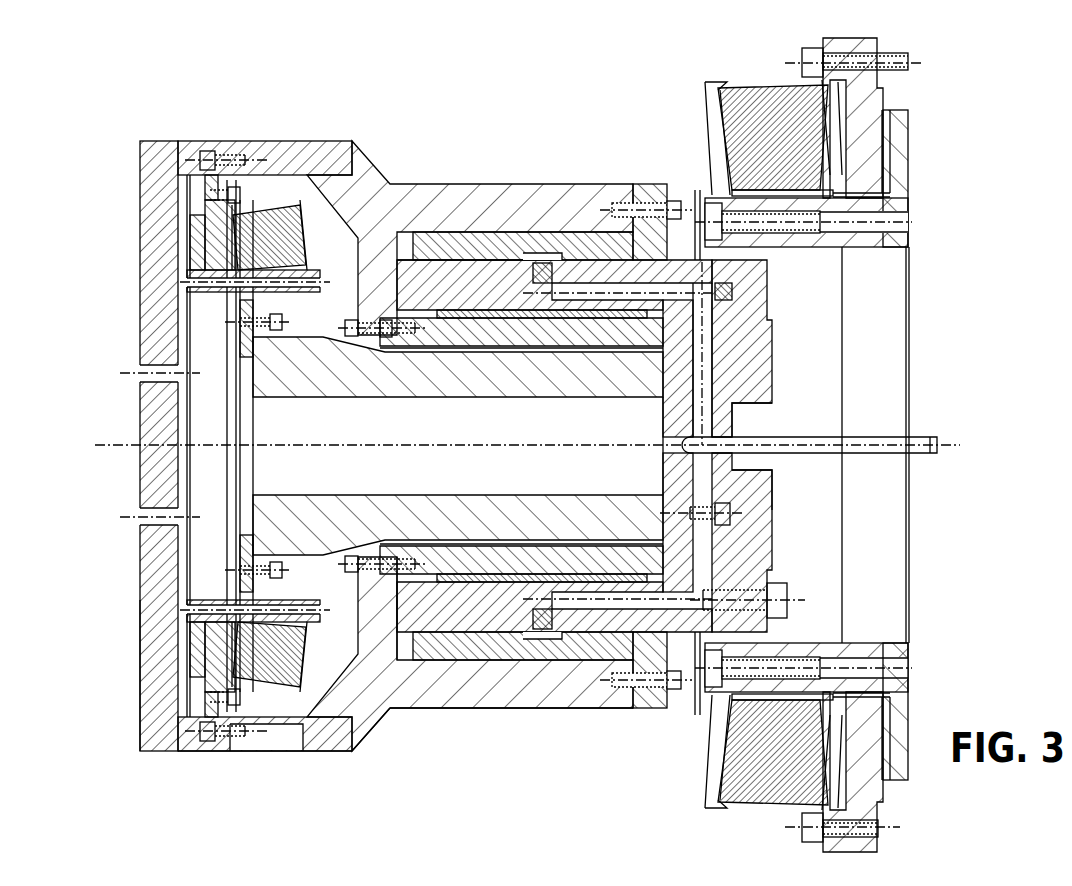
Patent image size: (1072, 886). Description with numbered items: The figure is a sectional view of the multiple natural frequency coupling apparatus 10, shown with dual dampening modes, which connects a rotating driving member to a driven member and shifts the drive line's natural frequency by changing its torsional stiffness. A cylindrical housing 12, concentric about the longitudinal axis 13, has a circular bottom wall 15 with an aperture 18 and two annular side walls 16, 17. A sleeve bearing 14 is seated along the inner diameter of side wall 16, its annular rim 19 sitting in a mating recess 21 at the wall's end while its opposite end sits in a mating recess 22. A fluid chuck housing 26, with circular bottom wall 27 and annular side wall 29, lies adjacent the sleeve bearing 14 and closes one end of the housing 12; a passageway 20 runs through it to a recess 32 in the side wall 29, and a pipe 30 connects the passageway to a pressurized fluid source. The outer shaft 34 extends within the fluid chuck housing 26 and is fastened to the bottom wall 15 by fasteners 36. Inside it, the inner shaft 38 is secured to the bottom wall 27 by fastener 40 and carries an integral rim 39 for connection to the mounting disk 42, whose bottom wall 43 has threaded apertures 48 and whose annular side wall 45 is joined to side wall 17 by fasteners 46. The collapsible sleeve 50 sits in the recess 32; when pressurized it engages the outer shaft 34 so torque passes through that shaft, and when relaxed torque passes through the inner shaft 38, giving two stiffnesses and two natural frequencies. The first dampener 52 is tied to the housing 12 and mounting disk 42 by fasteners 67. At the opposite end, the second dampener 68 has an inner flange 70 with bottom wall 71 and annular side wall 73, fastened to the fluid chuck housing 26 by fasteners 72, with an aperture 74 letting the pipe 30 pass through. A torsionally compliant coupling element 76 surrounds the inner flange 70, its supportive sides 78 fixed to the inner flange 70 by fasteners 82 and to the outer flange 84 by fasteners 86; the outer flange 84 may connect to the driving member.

The multiple natural frequency coupling apparatus 10 is at (1010, 115).
The housing 12 is at (447, 184).
The longitudinal axis 13 is at (117, 455).
The sleeve bearing 14 is at (540, 248).
The bottom wall 15 is at (362, 625).
The annular side wall 16 is at (490, 710).
The annular side wall 17 is at (330, 752).
The aperture 18 is at (380, 550).
The annular rim 19 is at (674, 708).
The passageway 20 is at (705, 371).
The mating recess 21 is at (640, 708).
The mating recess 22 is at (425, 660).
The fluid chuck housing 26 is at (690, 262).
The bottom wall 27 is at (770, 560).
The annular side wall 29 is at (600, 258).
The pipe 30 is at (925, 460).
The recess 32 is at (598, 318).
The outer shaft 34 is at (392, 330).
The fasteners 36 is at (347, 322).
The inner shaft 38 is at (315, 345).
The rim 39 is at (225, 598).
The fastener 40 is at (738, 515).
The mounting disk 42 is at (138, 292).
The bottom wall 43 is at (140, 690).
The annular side wall 45 is at (170, 752).
The fasteners 46 is at (205, 160).
The threaded apertures 48 is at (150, 373).
The collapsible sleeve 50 is at (478, 309).
The dampener 52 is at (265, 700).
The fasteners 67 is at (235, 752).
The second dampener 68 is at (765, 795).
The inner flange 70 is at (768, 290).
The bottom wall 71 is at (772, 403).
The fasteners 72 is at (790, 600).
The annular side wall 73 is at (910, 240).
The aperture 74 is at (772, 488).
The torsionally compliant coupling element 76 is at (765, 100).
The supportive sides 78 is at (710, 800).
The fasteners 82 is at (700, 190).
The outer flange 84 is at (892, 90).
The fasteners 86 is at (910, 70).